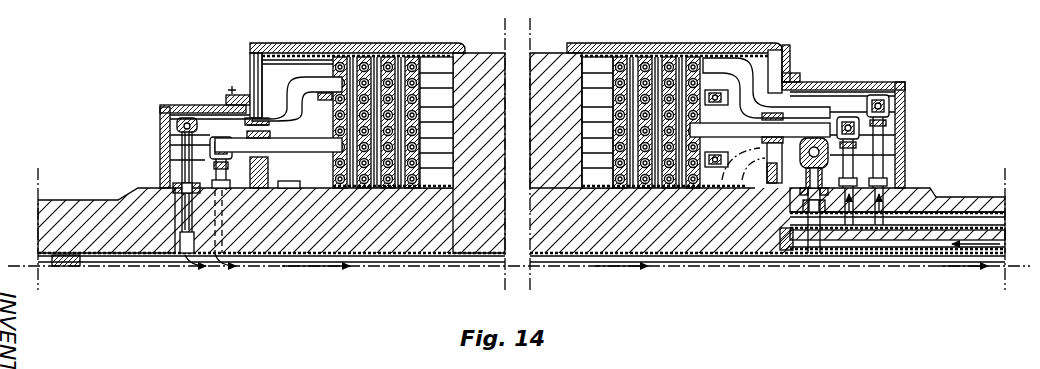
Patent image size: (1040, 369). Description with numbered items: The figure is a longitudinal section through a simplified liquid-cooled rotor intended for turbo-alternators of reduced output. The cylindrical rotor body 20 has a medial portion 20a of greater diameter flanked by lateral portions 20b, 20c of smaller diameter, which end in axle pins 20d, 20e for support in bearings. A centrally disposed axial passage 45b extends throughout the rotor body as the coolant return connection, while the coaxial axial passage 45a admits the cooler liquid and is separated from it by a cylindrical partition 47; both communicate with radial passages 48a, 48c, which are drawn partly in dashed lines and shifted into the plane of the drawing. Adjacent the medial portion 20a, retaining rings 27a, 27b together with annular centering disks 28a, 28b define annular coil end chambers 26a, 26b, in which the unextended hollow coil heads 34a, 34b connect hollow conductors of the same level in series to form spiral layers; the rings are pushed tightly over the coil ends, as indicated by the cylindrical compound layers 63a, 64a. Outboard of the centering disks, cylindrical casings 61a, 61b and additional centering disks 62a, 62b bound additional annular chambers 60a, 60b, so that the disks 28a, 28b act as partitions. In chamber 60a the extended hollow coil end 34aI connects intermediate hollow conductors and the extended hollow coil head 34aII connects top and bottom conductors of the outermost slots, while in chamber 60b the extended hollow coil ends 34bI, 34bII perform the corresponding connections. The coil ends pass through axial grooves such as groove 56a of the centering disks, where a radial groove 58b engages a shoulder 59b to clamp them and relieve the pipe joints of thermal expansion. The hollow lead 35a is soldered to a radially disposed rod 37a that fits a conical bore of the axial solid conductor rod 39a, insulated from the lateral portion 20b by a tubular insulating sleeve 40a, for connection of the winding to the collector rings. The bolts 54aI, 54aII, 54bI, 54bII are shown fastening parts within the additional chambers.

The rotor body 20 is at (475, 62).
The medial portion 20a is at (455, 256).
The lateral portion 20b is at (920, 190).
The lateral portion 20c is at (270, 257).
The axle pin 20d is at (985, 196).
The axle pin 20e is at (58, 207).
The annular coil end chamber 26a is at (758, 48).
The annular coil end chamber 26b is at (290, 55).
The retaining ring 27a is at (618, 57).
The retaining ring 27b is at (347, 53).
The annular centering disk 28a is at (760, 188).
The annular centering disk 28b is at (263, 188).
The hollow coil heads 34a is at (556, 185).
The extended hollow coil end 34aI is at (650, 187).
The extended hollow coil head 34aII is at (718, 60).
The hollow coil heads 34b is at (432, 177).
The extended hollow coil end 34bI is at (319, 152).
The extended hollow coil end 34bII is at (238, 86).
The hollow lead 35a is at (700, 180).
The radially disposed rod 37a is at (815, 138).
The solid conductor rod 39a is at (902, 218).
The tubular insulating sleeve 40a is at (933, 228).
The axial passage 45a is at (840, 258).
The axial passage 45b is at (365, 258).
The cylindrical partition 47 is at (988, 265).
The radial passage 48a is at (778, 258).
The radial passage 48c is at (185, 258).
The bolt 54aI is at (848, 117).
The bolt 54aII is at (876, 95).
The bolt 54bI is at (220, 137).
The bolt 54bII is at (183, 118).
The axial groove 56a is at (258, 66).
The radial groove 58b is at (268, 78).
The shoulder 59b is at (262, 158).
The additional annular chamber 60a is at (905, 98).
The additional annular chamber 60b is at (172, 132).
The cylindrical casing 61a is at (885, 82).
The cylindrical casing 61b is at (162, 106).
The additional centering disk 62a is at (905, 125).
The additional centering disk 62b is at (163, 170).
The cylindrical compound layer 63a is at (598, 58).
The cylindrical compound layer 64a is at (612, 182).